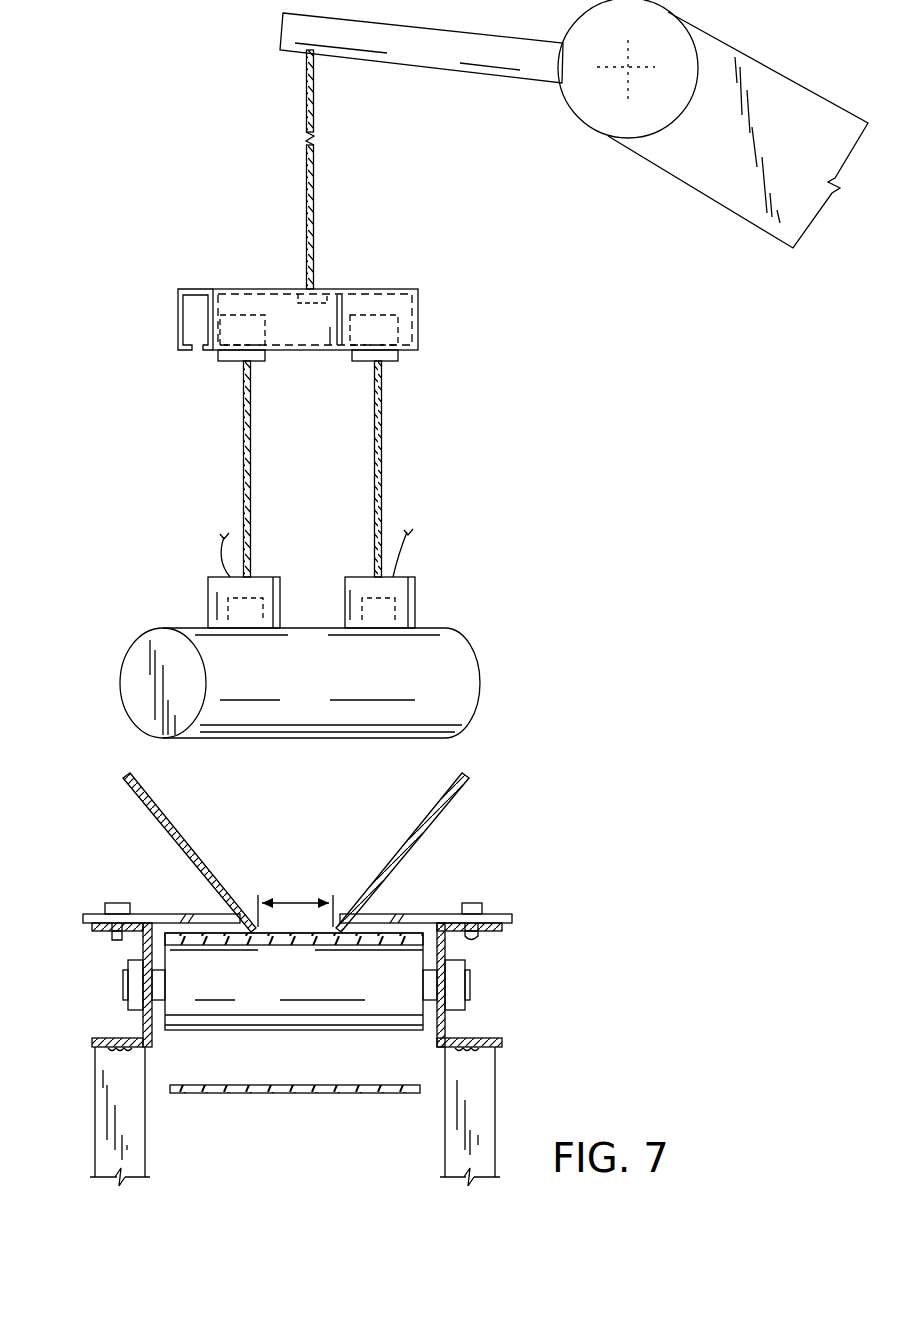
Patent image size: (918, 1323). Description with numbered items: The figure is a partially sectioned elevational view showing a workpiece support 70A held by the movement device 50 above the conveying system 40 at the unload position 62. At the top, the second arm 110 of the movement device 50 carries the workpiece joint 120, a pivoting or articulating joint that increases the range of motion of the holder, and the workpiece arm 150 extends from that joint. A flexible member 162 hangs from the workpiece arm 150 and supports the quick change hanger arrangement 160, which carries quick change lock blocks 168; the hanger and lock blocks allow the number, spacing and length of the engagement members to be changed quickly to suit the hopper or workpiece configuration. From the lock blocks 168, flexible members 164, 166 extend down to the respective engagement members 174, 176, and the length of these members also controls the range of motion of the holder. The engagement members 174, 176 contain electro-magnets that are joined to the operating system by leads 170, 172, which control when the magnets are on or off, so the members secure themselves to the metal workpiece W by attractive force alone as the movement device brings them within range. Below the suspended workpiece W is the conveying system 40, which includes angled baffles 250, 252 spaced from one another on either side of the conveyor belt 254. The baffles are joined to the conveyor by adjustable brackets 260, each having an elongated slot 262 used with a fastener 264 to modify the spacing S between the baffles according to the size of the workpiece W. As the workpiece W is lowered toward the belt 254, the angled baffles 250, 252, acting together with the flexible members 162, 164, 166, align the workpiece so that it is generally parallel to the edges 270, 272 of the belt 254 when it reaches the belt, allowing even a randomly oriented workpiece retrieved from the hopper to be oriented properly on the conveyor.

The movement device 50 is at (762, 46).
The second arm 110 is at (725, 190).
The workpiece joint 120 is at (600, 113).
The workpiece arm 150 is at (437, 66).
The flexible member 162 is at (313, 177).
The unload position 62 is at (163, 452).
The quick change hanger arrangement 160 is at (245, 288).
The quick change lock blocks 168 is at (185, 312).
The flexible member 164 is at (250, 442).
The flexible member 166 is at (383, 442).
The workpiece support 70A is at (467, 442).
The lead 170 is at (222, 553).
The lead 172 is at (403, 551).
The engagement member 174 is at (212, 593).
The engagement member 176 is at (405, 592).
The workpiece W is at (462, 672).
The conveying system 40 is at (563, 860).
The angled baffle 250 is at (160, 825).
The angled baffle 252 is at (440, 812).
The conveyor belt 254 is at (390, 935).
The adjustable bracket 260 is at (188, 915).
The elongated slot 262 is at (142, 933).
The fastener 264 is at (112, 902).
The edge of belt 270 is at (422, 937).
The edge of belt 272 is at (162, 948).
The spacing S is at (295, 900).